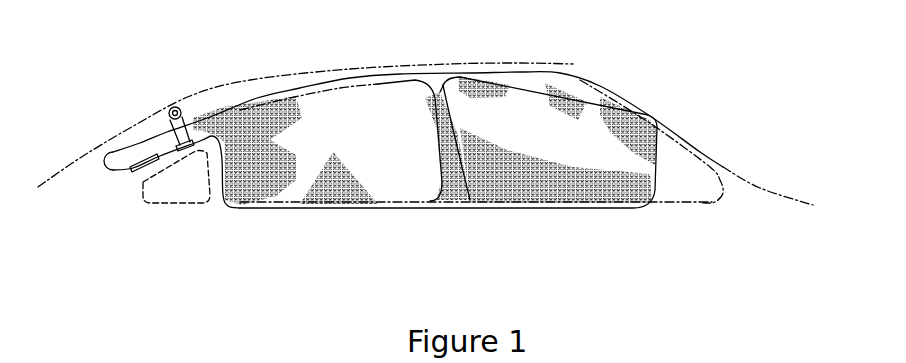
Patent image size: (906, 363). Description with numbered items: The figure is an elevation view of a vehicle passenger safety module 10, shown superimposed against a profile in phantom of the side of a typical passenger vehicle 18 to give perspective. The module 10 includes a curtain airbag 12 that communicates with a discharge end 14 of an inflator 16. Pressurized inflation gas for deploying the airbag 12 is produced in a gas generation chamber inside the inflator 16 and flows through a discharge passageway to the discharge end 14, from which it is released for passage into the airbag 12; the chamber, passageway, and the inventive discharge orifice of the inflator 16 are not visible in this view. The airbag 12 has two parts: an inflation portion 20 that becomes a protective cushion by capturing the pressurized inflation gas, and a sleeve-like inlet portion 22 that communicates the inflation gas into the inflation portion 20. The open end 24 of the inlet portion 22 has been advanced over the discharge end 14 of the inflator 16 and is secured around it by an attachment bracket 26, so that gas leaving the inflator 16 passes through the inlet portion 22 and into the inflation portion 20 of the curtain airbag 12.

The vehicle passenger safety module 10 is at (130, 252).
The curtain airbag 12 is at (351, 40).
The discharge end 14 is at (159, 141).
The inflator 16 is at (137, 152).
The passenger vehicle 18 is at (583, 69).
The inflation portion 20 is at (638, 170).
The inlet portion 22 is at (158, 120).
The open end 24 is at (157, 135).
The attachment bracket 26 is at (188, 158).